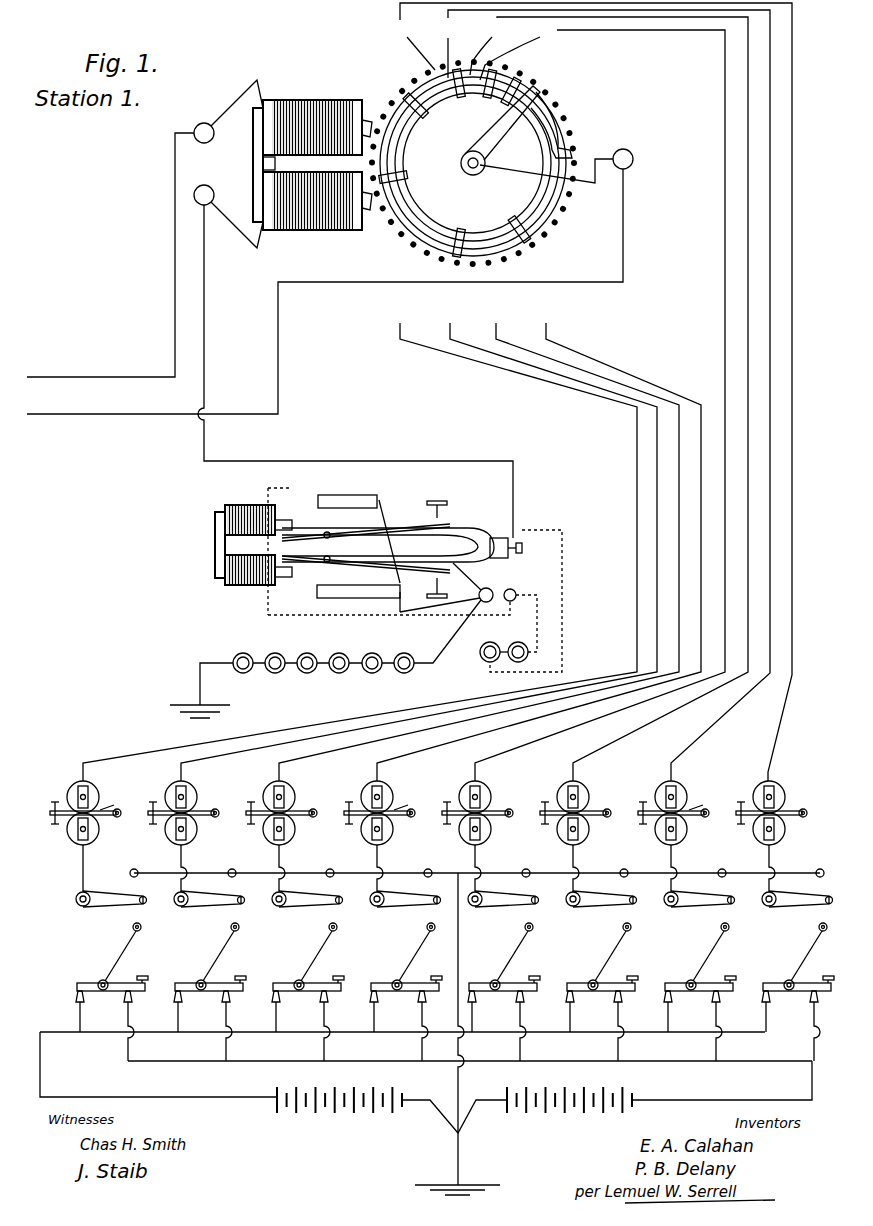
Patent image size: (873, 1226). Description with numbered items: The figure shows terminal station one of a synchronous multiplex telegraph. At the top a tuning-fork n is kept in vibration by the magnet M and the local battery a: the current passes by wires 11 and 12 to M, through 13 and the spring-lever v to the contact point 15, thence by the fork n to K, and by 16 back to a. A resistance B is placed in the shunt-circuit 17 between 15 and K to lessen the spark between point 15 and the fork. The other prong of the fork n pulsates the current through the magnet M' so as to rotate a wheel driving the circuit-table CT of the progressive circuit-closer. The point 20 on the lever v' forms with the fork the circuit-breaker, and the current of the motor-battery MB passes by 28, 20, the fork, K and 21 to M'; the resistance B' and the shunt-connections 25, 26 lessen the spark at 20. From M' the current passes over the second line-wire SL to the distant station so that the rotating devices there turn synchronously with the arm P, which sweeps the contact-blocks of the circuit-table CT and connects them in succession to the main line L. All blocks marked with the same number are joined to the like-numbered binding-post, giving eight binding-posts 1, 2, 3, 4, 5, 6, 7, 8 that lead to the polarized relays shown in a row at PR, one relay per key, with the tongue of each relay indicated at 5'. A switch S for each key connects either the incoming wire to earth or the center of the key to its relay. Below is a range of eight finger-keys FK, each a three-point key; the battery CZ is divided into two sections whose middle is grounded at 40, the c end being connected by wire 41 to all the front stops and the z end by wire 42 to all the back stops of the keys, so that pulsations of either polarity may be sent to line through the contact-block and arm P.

The circuit-closing blocks and binding-post 1 is at (612, 532).
The circuit-closing blocks and binding-post 2 is at (604, 535).
The circuit-closing blocks and binding-post 3 is at (609, 539).
The circuit-closing blocks and binding-post 4 is at (596, 540).
The circuit-closing blocks and binding-post 5 is at (535, 682).
The circuit-closing blocks and binding-post 6 is at (475, 682).
The circuit-closing blocks and binding-post 7 is at (415, 682).
The circuit-closing blocks and binding-post 8 is at (356, 682).
The wire 11 is at (532, 623).
The wire 12 is at (389, 608).
The wire 13 is at (326, 532).
The contact point 15 is at (366, 531).
The wire 16 is at (533, 601).
The shunt-circuit 17 is at (389, 541).
The point 20 is at (365, 559).
The wire 21 is at (355, 371).
The shunt-connection 25 is at (408, 592).
The shunt-connection 26 is at (458, 587).
The wire 28 is at (447, 631).
The earth connection 40 is at (457, 1034).
The wire 41 is at (722, 1080).
The wire 42 is at (158, 1064).
The armature of printing relay 5' is at (401, 802).
The magnet M' is at (312, 164).
The magnet M is at (253, 545).
The circuit-table CT is at (473, 161).
The circuit-closing arm P is at (516, 130).
The line L is at (562, 166).
The second line-wire SL is at (325, 247).
The resistance B is at (347, 502).
The resistance B' is at (358, 592).
The key K is at (506, 541).
The tuning-fork n is at (388, 538).
The spring-lever v is at (392, 549).
The local battery a is at (504, 645).
The motor-battery MB is at (292, 679).
The polarized relays PR is at (437, 831).
The switch S is at (454, 899).
The finger-keys FK is at (426, 1004).
The battery CZ is at (454, 1101).
The Z end of battery z is at (334, 1099).
The C end of battery c is at (575, 1099).